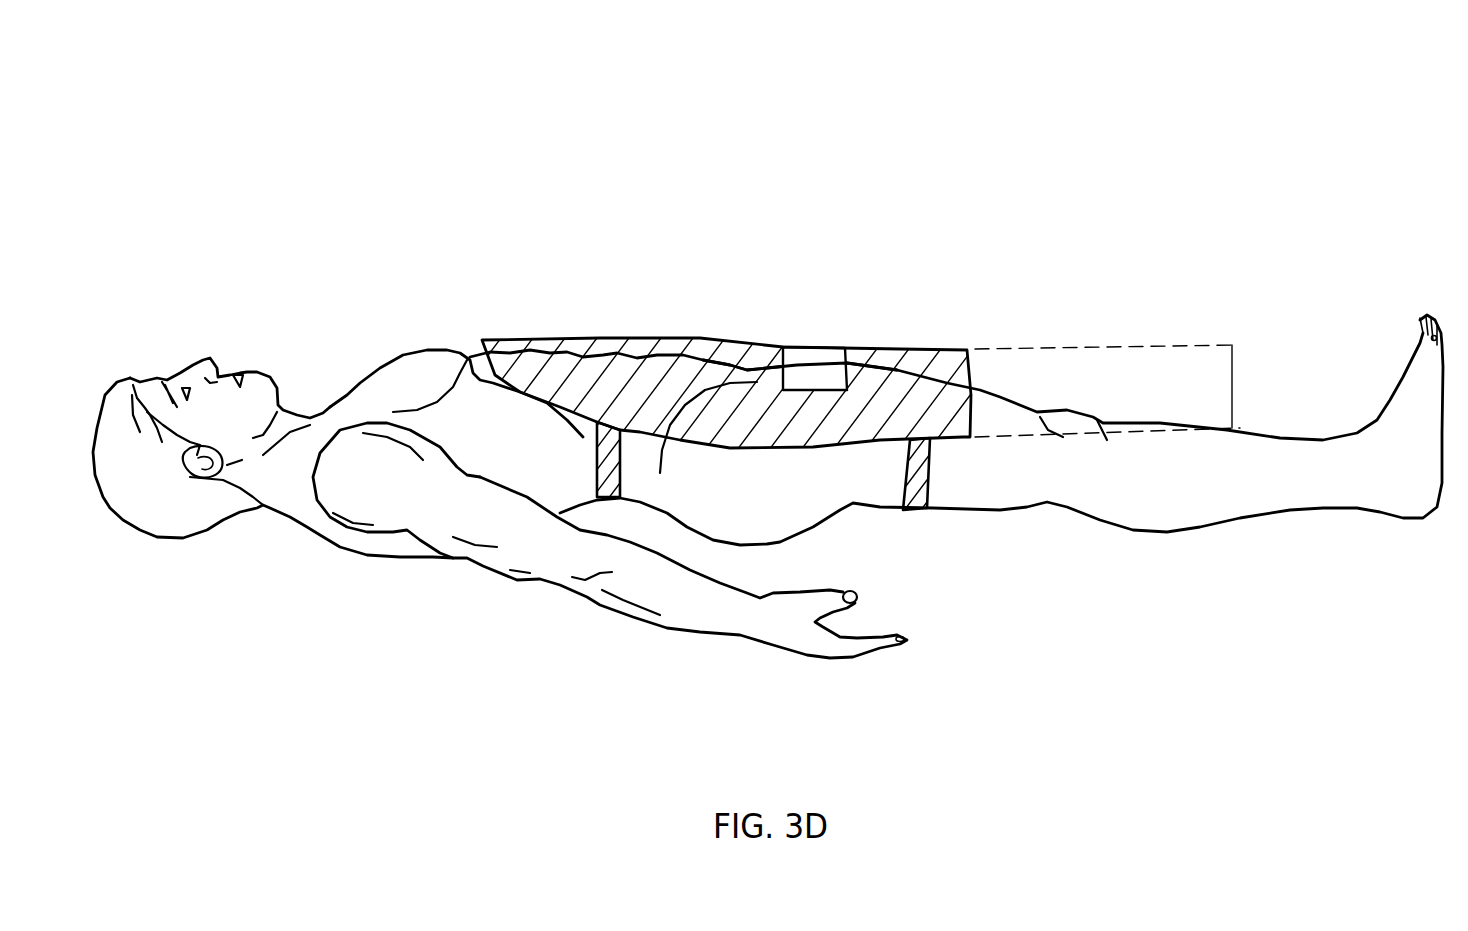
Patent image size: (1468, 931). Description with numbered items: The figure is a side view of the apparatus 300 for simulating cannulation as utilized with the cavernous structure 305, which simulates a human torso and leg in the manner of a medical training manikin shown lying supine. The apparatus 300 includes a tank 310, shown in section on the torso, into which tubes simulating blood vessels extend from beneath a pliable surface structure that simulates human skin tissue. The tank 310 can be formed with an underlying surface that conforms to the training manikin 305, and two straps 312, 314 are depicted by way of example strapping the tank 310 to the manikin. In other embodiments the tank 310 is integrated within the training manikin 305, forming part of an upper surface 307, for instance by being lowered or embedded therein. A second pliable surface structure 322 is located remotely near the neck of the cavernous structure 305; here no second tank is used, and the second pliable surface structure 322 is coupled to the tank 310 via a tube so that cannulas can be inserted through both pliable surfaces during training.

The apparatus 300 is at (1273, 102).
The cavernous structure 305 is at (988, 512).
The upper surface 307 is at (1013, 367).
The tank 310 is at (567, 337).
The strap 312 is at (611, 499).
The strap 314 is at (915, 513).
The second pliable surface structure 322 is at (367, 397).